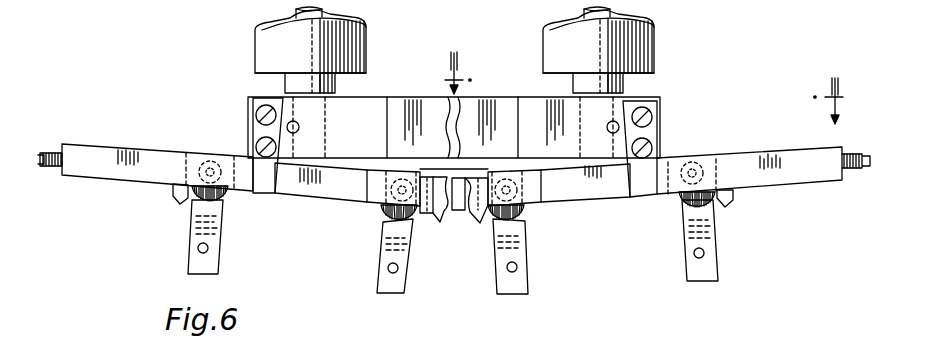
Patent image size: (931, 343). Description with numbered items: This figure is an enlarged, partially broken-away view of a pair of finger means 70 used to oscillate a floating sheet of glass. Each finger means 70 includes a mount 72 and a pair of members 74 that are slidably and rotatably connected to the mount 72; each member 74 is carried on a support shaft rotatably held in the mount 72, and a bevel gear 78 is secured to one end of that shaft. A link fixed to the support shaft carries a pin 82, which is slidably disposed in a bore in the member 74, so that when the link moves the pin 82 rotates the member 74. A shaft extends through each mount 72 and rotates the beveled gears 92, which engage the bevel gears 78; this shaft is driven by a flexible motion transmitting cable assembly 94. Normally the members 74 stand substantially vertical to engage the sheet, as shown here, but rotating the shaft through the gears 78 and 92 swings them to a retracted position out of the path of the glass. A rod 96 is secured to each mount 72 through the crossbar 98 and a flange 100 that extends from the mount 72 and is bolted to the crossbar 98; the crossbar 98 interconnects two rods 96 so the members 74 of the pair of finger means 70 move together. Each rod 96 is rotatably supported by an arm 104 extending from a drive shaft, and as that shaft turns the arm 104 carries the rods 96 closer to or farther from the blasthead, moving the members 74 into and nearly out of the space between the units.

The finger means 70 is at (152, 223).
The mount 72 is at (322, 192).
The member 74 is at (215, 259).
The bevel gear 78 is at (226, 197).
The pin 82 is at (198, 249).
The beveled gear 92 is at (173, 190).
The flexible motion transmitting cable assembly 94 is at (55, 144).
The rod 96 is at (296, 12).
The crossbar 98 is at (481, 106).
The flange 100 is at (250, 128).
The arm 104 is at (266, 61).